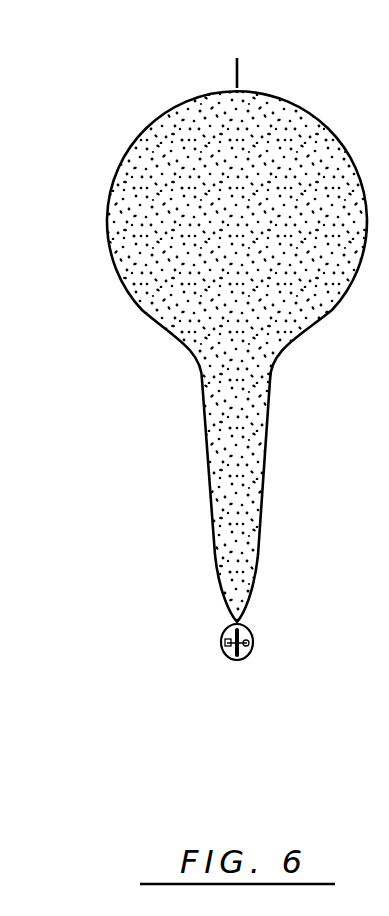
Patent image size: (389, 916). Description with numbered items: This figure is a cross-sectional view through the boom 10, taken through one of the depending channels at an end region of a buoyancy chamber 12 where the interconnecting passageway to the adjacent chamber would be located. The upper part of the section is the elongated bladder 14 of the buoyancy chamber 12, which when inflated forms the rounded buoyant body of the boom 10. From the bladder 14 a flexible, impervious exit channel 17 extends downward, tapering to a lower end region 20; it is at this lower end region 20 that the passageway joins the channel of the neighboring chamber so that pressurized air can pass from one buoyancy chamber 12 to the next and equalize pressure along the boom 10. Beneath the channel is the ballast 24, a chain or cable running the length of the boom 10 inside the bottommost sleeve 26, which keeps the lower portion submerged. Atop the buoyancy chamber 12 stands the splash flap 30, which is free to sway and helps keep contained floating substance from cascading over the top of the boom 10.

The boom 10 is at (135, 131).
The buoyancy chamber 12 is at (198, 356).
The elongated bladder 14 is at (113, 259).
The exit channel 17 is at (212, 513).
The lower end region 20 is at (254, 601).
The ballast 24 is at (250, 658).
The bottommost sleeve 26 is at (253, 641).
The splash flap 30 is at (239, 70).